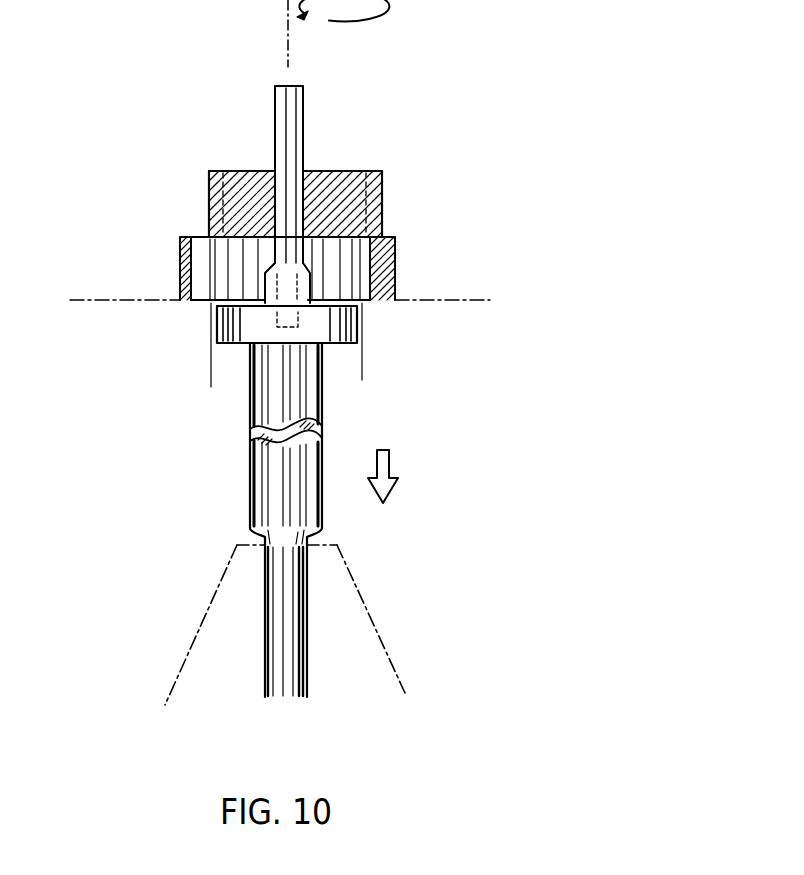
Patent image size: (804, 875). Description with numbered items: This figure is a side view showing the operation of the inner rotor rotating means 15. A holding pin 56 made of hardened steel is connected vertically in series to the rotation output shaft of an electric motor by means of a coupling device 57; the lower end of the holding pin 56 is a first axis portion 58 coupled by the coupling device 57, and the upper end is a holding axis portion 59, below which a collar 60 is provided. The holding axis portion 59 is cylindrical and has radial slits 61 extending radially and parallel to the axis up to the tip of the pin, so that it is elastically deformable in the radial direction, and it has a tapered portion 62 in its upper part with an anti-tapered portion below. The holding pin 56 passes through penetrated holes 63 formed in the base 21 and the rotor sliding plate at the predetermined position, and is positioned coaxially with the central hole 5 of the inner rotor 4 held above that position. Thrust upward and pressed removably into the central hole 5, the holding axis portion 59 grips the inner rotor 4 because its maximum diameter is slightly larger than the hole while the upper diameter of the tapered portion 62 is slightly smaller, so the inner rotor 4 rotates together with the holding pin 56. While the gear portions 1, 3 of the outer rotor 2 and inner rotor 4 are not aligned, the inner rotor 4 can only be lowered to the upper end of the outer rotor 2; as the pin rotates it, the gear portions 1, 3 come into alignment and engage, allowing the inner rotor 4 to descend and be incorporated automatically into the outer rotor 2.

The gear portion 1 is at (395, 237).
The outer rotor 2 is at (178, 253).
The gear portion 3 is at (378, 170).
The inner rotor 4 is at (238, 188).
The central hole 5 is at (325, 172).
The inner rotor rotating means 15 is at (182, 609).
The base 21 is at (316, 257).
The holding pin 56 is at (233, 410).
The coupling device 57 is at (380, 637).
The first axis portion 58 is at (273, 662).
The holding axis portion 59 is at (272, 147).
The collar 60 is at (357, 322).
The radial slits 61 is at (303, 88).
The tapered portion 62 is at (303, 115).
The penetrated holes 63 is at (367, 358).